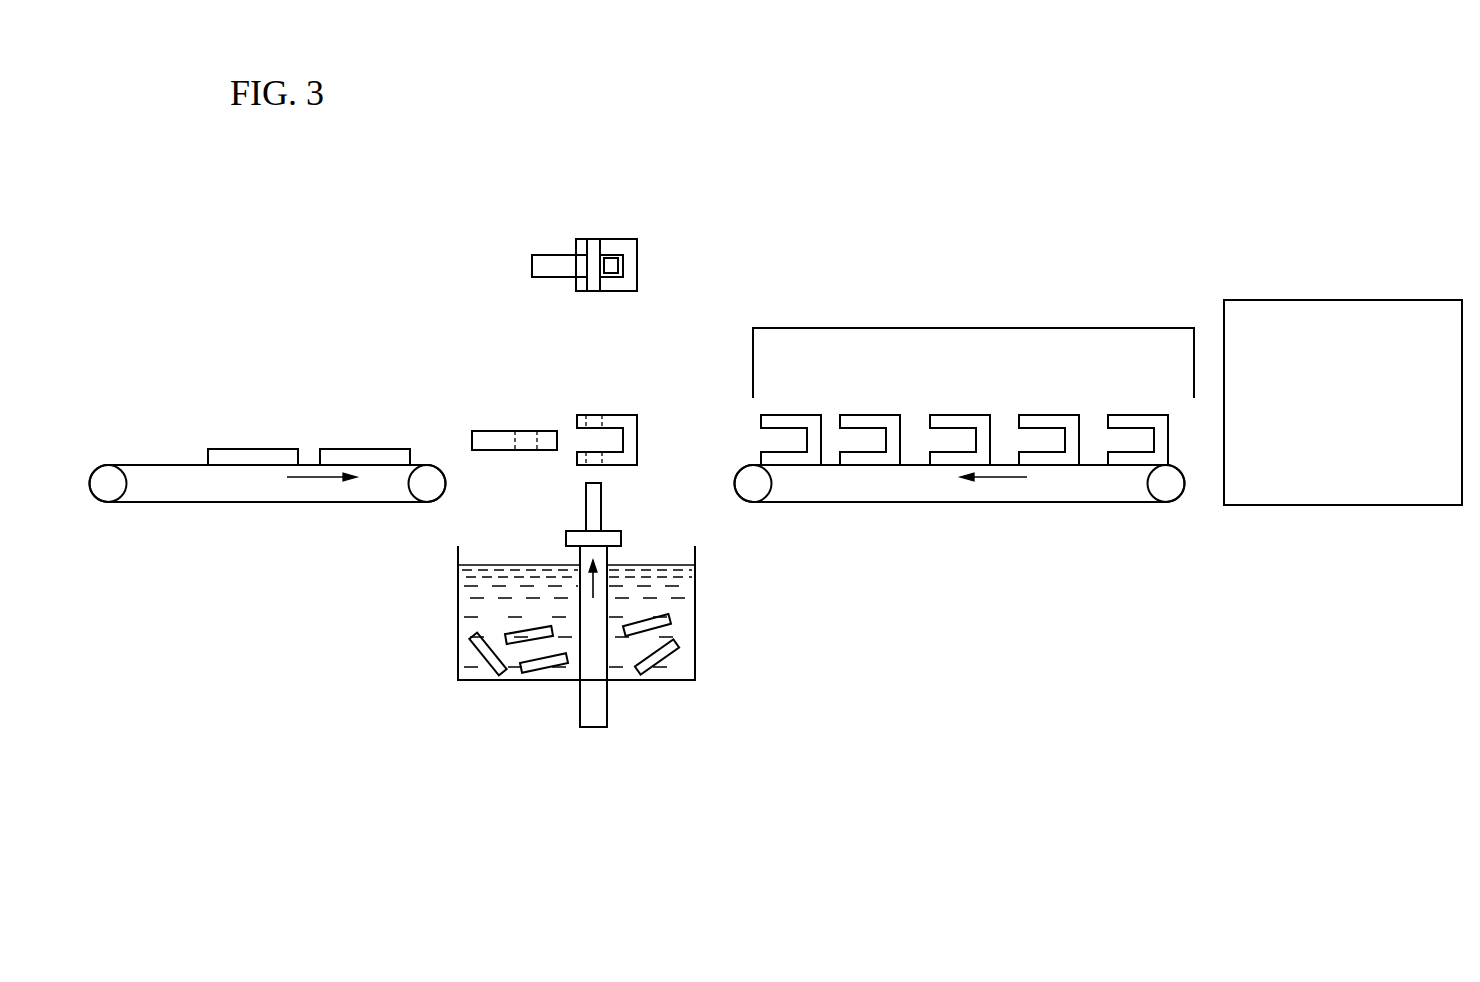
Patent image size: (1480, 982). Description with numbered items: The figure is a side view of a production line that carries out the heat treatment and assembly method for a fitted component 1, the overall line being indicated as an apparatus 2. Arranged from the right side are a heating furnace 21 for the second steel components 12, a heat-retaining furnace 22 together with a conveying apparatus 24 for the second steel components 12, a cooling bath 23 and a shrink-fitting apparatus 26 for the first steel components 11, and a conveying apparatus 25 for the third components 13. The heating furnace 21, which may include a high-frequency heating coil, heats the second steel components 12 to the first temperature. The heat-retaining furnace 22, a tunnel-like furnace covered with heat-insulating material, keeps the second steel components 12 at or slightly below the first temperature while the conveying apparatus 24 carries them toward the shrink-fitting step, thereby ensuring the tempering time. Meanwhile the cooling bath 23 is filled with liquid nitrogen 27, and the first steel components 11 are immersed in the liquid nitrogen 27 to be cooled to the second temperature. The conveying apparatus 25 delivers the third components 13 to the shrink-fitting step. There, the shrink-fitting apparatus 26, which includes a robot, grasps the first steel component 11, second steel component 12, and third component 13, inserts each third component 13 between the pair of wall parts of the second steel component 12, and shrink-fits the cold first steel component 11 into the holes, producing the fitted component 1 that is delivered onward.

The fitted component 1 is at (650, 223).
The manufacturing apparatus 2 is at (991, 146).
The first steel component 11 is at (593, 502).
The second steel component 12 is at (620, 415).
The third component 13 is at (365, 460).
The heating furnace 21 is at (1343, 300).
The heat-retaining furnace 22 is at (998, 328).
The cooling bath 23 is at (678, 623).
The conveying apparatus 24 is at (975, 502).
The conveying apparatus 25 is at (275, 490).
The shrink-fitting apparatus 26 is at (599, 663).
The liquid nitrogen 27 is at (477, 612).